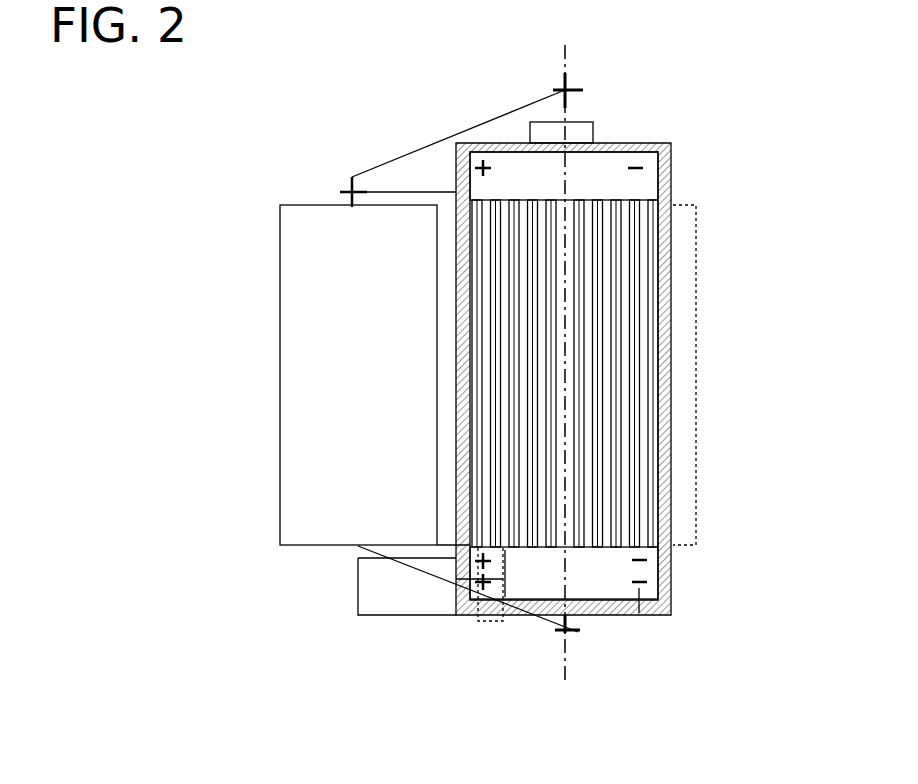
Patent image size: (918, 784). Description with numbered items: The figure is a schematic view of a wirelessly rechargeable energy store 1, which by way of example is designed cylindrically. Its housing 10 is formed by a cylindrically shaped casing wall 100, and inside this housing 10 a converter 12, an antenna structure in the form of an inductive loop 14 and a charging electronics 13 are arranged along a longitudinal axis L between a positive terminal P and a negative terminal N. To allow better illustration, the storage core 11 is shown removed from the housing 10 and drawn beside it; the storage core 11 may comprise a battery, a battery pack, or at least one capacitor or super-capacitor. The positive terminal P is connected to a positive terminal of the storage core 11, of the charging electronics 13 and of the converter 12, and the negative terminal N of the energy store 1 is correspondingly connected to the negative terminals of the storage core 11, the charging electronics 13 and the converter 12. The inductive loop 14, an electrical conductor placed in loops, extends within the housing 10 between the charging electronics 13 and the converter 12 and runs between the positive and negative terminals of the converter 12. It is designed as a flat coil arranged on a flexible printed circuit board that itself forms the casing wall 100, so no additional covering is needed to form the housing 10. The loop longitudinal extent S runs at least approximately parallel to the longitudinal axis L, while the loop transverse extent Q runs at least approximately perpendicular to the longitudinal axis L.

The wirelessly rechargeable energy store 1 is at (338, 170).
The housing 10 is at (677, 163).
The storage core 11 is at (382, 378).
The converter 12 is at (597, 177).
The charging electronics 13 is at (613, 570).
The inductive loop 14 is at (632, 368).
The casing wall 100 is at (658, 297).
The positive terminal P is at (583, 133).
The negative terminal N is at (575, 607).
The longitudinal axis L is at (565, 443).
The loop longitudinal extent S is at (696, 433).
The loop transverse extent Q is at (490, 621).